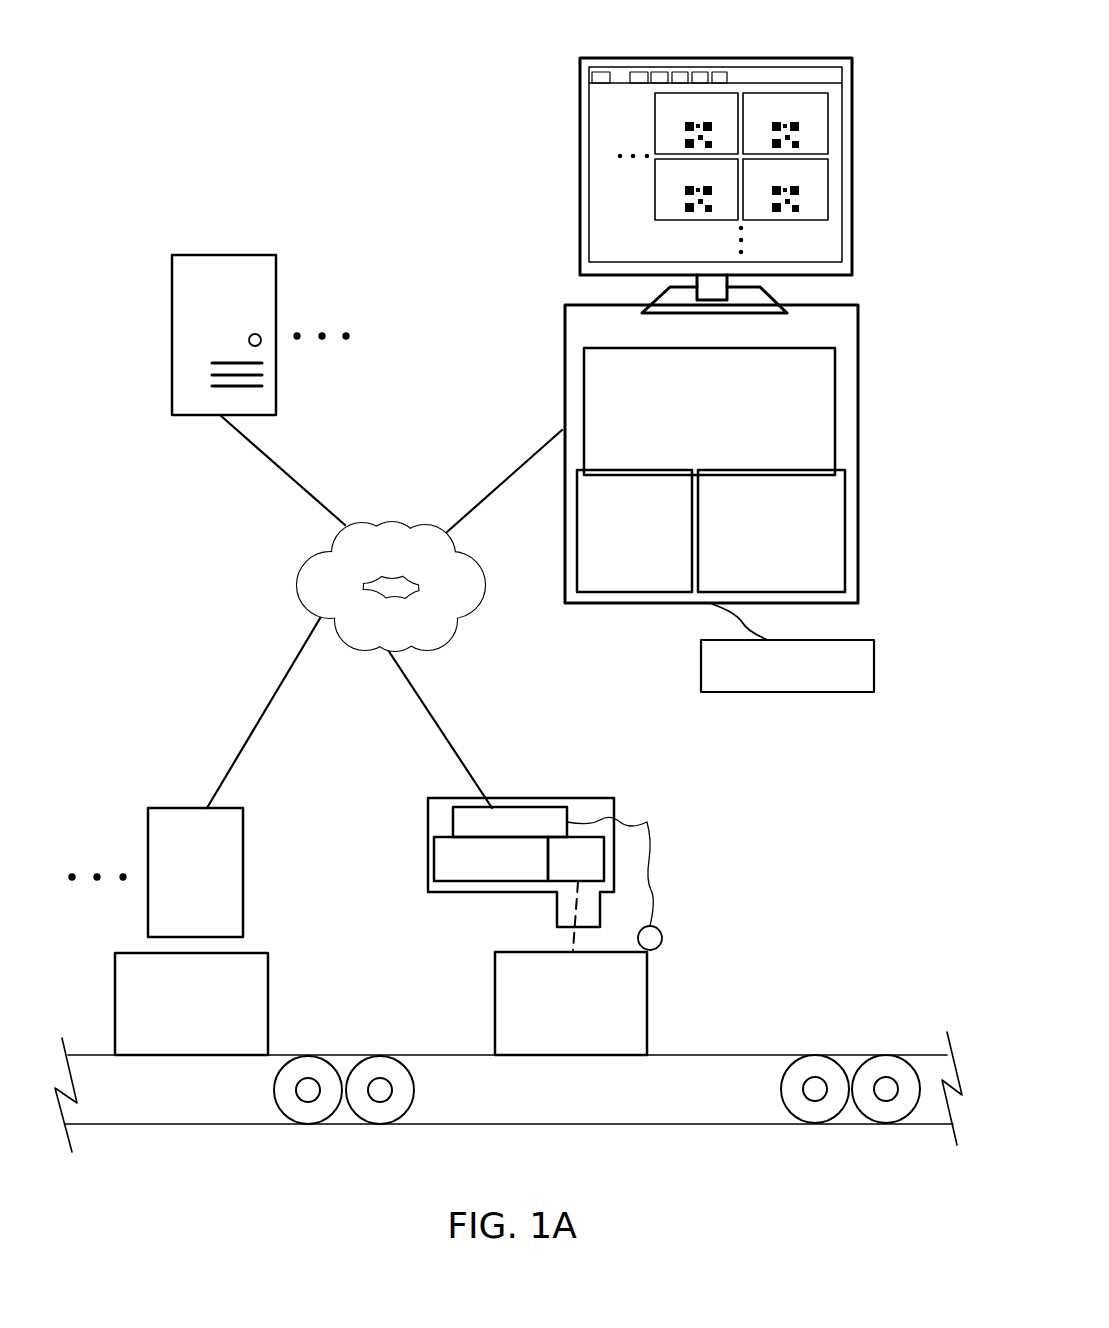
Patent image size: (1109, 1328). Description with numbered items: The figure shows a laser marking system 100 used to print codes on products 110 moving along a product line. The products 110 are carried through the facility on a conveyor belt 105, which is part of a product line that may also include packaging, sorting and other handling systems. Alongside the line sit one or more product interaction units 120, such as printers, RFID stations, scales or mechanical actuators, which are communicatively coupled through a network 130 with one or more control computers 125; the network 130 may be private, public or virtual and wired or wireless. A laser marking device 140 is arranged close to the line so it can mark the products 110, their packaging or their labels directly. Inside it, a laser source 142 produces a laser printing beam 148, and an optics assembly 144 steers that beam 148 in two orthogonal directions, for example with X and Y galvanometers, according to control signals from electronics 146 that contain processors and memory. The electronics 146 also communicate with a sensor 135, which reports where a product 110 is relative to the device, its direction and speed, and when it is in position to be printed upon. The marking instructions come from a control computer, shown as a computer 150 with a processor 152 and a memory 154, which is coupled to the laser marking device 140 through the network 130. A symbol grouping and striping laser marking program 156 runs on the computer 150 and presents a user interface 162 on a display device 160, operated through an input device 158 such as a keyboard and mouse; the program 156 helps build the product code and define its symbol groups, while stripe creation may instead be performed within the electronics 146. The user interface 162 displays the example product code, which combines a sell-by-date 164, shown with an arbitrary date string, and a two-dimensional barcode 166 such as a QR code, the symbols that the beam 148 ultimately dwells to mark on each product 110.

The laser marking system 100 is at (128, 120).
The conveyor belt 105 is at (330, 1138).
The product 110 is at (216, 1015).
The product interaction unit 120 is at (170, 808).
The control computer 125 is at (172, 330).
The network 130 is at (298, 575).
The sensor 135 is at (660, 930).
The laser marking device 140 is at (567, 798).
The laser source 142 is at (511, 870).
The optics assembly 144 is at (598, 870).
The electronics 146 is at (531, 835).
The laser printing beam 148 is at (562, 933).
The computer 150 is at (846, 341).
The processor 152 is at (615, 557).
The memory 154 is at (752, 557).
The symbol grouping and striping laser marking program 156 is at (688, 461).
The input device 158 is at (857, 640).
The display device 160 is at (732, 58).
The user interface 162 is at (808, 67).
The sell-by-date 164 is at (832, 108).
The 2D barcode 166 is at (810, 136).